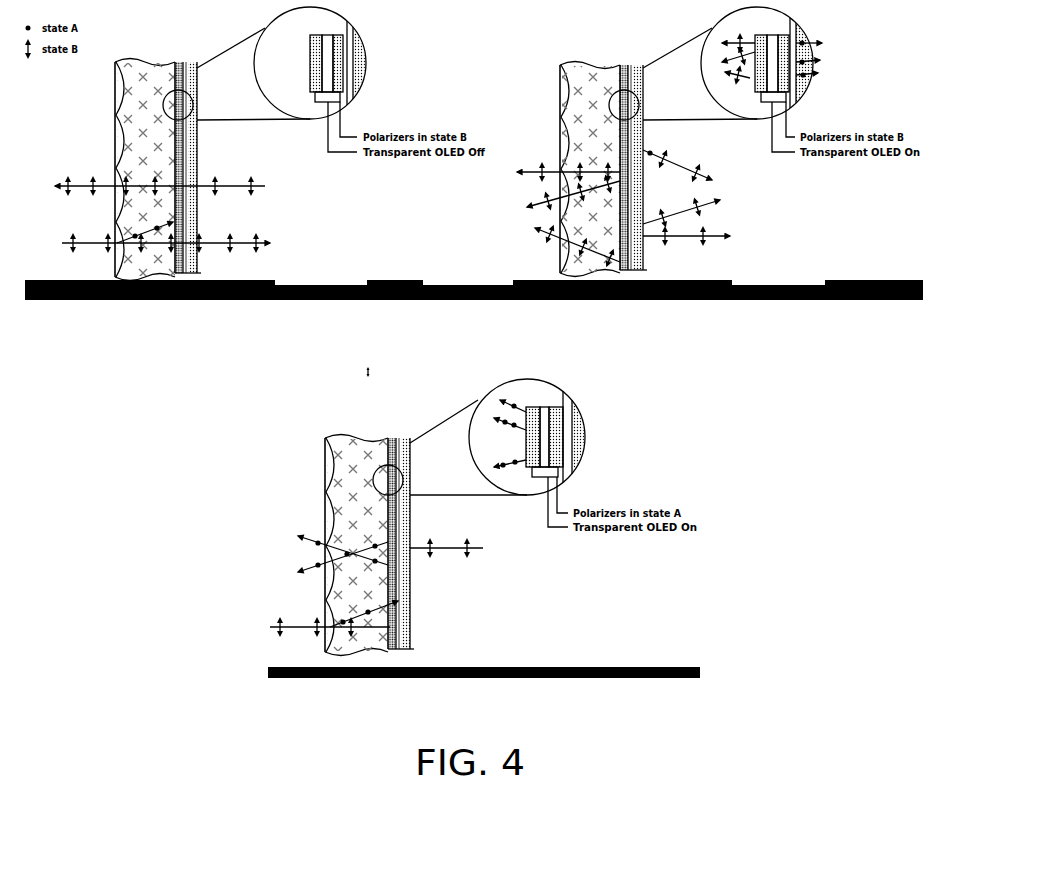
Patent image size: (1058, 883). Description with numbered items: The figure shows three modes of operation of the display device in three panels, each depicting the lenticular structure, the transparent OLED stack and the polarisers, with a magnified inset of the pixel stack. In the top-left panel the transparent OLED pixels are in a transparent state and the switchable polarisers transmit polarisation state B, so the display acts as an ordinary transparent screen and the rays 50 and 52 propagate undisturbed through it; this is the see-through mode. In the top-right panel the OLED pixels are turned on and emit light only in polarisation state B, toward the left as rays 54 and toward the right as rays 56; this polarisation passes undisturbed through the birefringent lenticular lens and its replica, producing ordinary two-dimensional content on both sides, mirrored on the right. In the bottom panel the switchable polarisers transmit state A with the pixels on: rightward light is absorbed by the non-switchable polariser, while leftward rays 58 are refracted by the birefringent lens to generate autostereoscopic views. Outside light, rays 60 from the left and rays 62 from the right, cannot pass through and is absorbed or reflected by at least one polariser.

The rays 50 is at (270, 187).
The rays 52 is at (277, 249).
The rays 54 is at (503, 200).
The rays 56 is at (735, 200).
The rays 58 is at (290, 548).
The rays 60 is at (262, 630).
The rays 62 is at (487, 549).